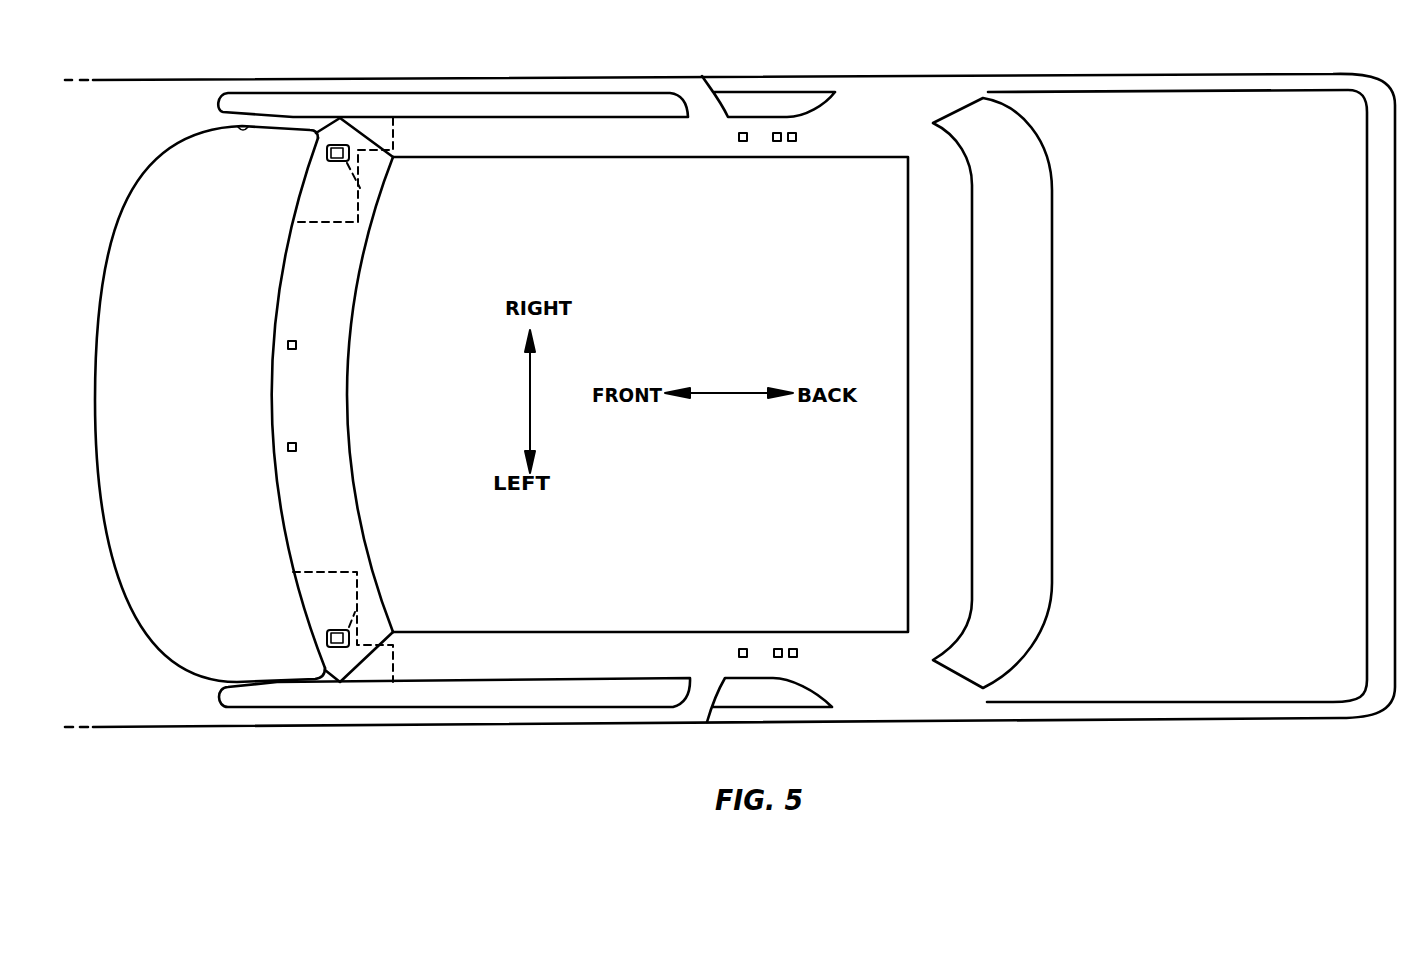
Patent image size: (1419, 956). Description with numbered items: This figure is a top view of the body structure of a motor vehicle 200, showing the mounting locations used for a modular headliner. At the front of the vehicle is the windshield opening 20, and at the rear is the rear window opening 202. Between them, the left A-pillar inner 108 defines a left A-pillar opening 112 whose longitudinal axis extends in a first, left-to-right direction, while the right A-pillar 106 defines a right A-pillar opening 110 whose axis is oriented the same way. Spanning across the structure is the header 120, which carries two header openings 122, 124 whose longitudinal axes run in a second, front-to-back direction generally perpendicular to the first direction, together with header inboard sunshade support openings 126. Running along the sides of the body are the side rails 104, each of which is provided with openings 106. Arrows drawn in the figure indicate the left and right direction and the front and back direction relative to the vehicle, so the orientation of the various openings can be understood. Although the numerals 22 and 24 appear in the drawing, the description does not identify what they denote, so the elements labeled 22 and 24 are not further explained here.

The windshield opening 20 is at (243, 127).
The left running board 22 is at (275, 682).
The right running board 24 is at (273, 122).
The side rails 104 is at (712, 655).
The right A-pillar 106 is at (743, 141).
The left A-pillar inner 108 is at (345, 572).
The right A-pillar opening 110 is at (349, 162).
The left A-pillar opening 112 is at (355, 612).
The header 120 is at (293, 495).
The header opening 122 is at (327, 154).
The header opening 124 is at (327, 637).
The header inboard sunshade support openings 126 is at (290, 350).
The motor vehicle 200 is at (578, 731).
The rear window opening 202 is at (977, 105).